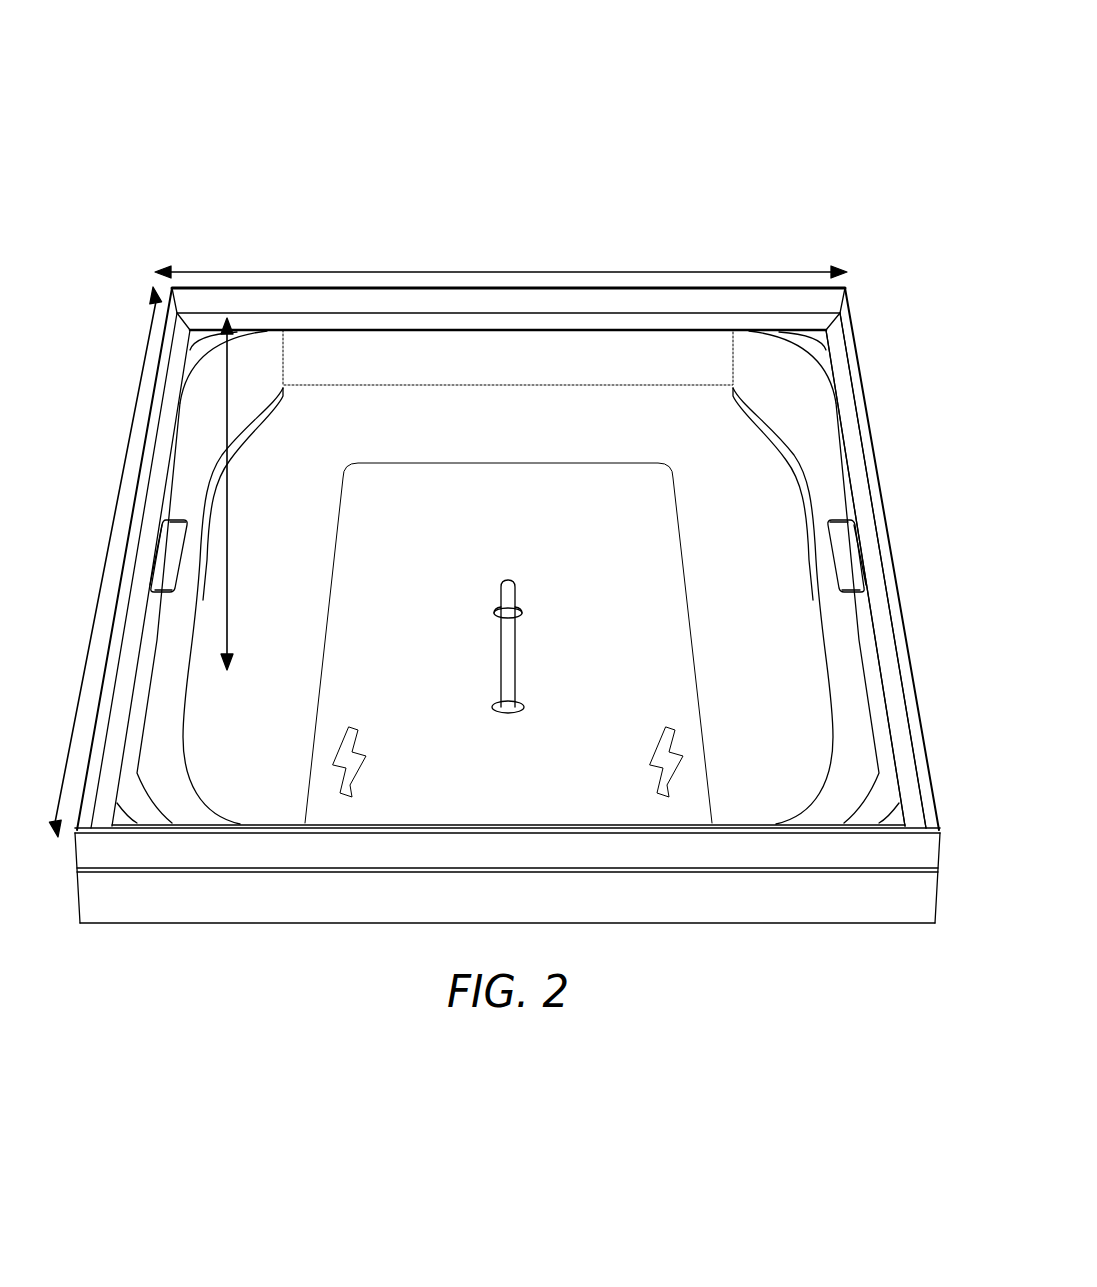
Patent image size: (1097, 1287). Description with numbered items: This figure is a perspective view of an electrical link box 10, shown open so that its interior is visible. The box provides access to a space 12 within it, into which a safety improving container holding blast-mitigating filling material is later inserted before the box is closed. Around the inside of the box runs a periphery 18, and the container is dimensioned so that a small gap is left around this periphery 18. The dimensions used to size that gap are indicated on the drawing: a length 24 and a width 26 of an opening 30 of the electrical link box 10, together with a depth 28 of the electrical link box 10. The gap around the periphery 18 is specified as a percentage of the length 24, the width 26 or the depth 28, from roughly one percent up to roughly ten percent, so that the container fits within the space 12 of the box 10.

The electrical link box 10 is at (722, 116).
The space 12 is at (734, 460).
The periphery 18 is at (853, 481).
The length 24 is at (105, 557).
The width 26 is at (447, 272).
The depth 28 is at (303, 838).
The opening 30 is at (726, 643).